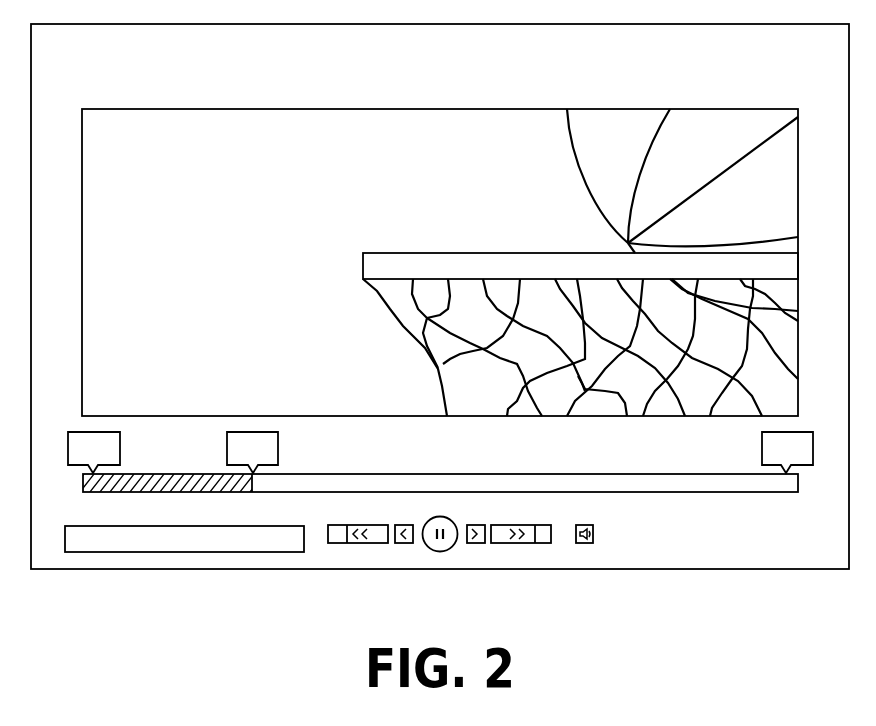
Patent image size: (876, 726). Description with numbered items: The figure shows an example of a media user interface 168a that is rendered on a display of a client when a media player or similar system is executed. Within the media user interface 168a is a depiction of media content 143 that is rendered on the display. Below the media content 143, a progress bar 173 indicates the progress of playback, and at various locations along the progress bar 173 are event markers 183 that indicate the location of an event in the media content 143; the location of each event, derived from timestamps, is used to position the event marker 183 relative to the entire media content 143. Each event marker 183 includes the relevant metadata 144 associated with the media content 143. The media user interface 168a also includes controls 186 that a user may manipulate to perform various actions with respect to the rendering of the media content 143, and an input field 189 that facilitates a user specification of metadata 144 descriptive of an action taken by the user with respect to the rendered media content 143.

The media content 143 is at (591, 109).
The metadata 144 is at (219, 443).
The event marker 183 is at (279, 450).
The progress bar 173 is at (442, 474).
The controls 186 is at (632, 530).
The input field 189 is at (176, 552).
The media user interface 168a is at (627, 568).